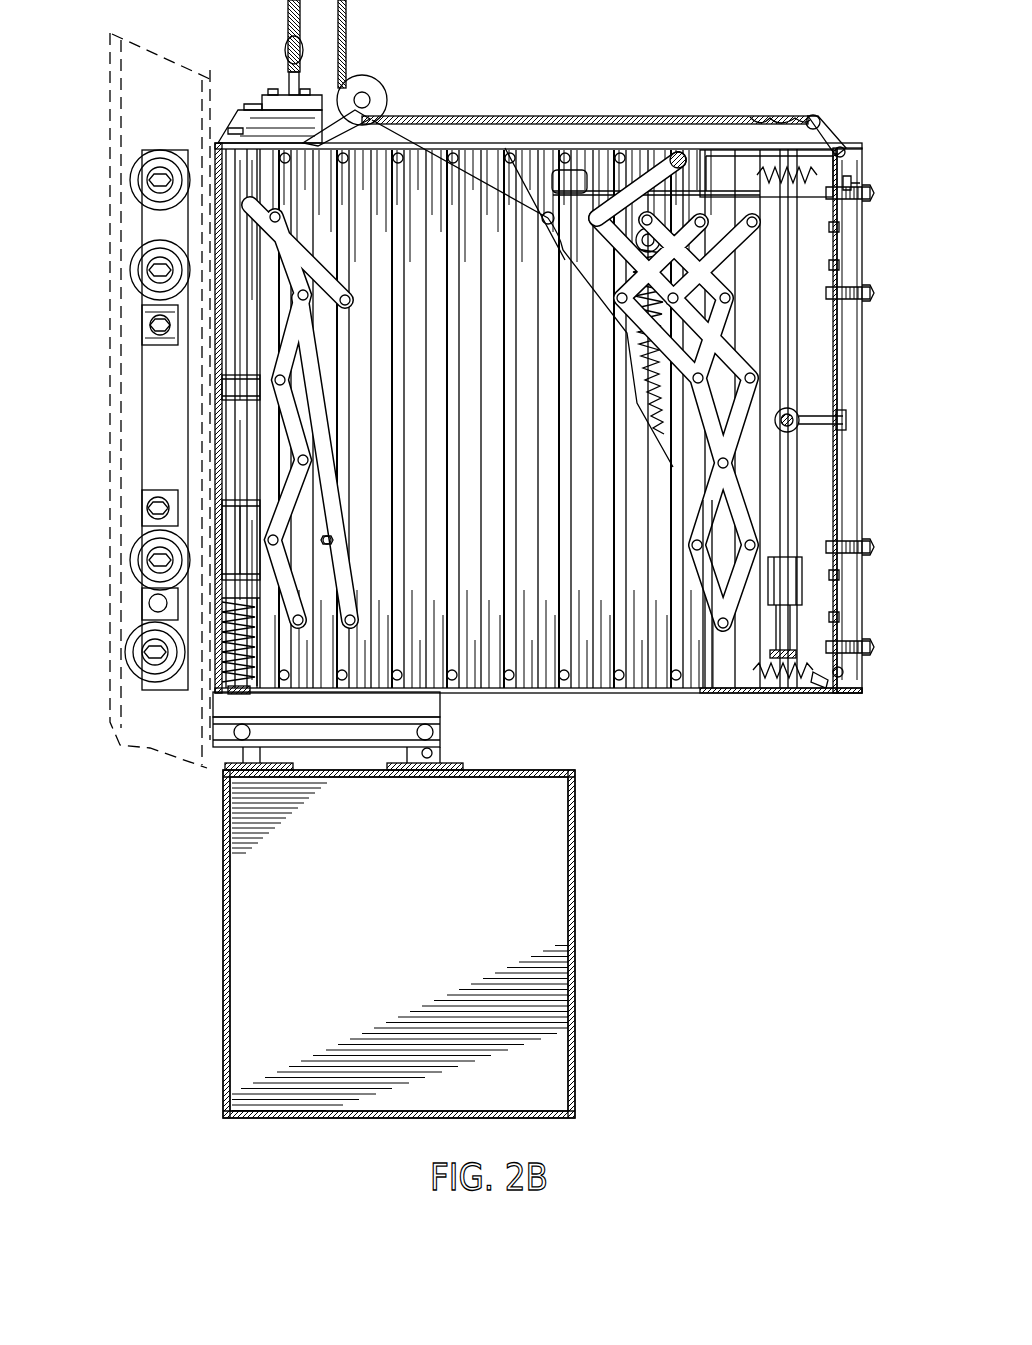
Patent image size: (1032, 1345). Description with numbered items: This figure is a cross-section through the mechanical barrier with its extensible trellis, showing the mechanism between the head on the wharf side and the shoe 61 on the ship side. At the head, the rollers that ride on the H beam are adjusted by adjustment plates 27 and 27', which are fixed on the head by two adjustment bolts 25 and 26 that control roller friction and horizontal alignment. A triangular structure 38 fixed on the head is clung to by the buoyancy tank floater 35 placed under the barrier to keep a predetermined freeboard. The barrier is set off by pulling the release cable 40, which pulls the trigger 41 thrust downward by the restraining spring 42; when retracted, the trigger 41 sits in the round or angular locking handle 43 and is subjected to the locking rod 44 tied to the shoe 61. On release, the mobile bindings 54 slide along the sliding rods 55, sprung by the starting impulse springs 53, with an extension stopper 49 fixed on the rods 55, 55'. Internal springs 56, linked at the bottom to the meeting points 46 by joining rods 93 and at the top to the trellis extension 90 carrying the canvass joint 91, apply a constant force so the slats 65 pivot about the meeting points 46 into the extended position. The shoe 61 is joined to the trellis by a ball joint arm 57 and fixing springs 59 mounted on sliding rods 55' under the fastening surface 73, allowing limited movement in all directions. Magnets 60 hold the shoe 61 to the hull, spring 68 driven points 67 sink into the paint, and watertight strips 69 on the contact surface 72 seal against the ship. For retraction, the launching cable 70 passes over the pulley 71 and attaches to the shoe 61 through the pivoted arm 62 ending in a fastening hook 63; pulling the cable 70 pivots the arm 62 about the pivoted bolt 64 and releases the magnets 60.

The adjustment bolt 25 is at (153, 507).
The adjustment bolt 26 is at (150, 604).
The adjustment plate 27 is at (121, 420).
The adjustment plate 27' is at (120, 548).
The buoyancy tank floater 35 is at (576, 893).
The triangular structure 38 is at (222, 730).
The release cable 40 is at (290, 42).
The trigger 41 is at (291, 86).
The restraining spring 42 is at (250, 123).
The locking handle 43 is at (555, 191).
The locking rod 44 is at (643, 232).
The meeting point 46 is at (420, 650).
The extension stopper 49 is at (213, 393).
The starting impulse spring 53 is at (212, 665).
The mobile binding 54 is at (228, 507).
The sliding rod 55 is at (201, 386).
The sliding rod 55' is at (746, 447).
The internal spring 56 is at (556, 172).
The ball joint arm 57 is at (815, 432).
The fixing spring 59 is at (782, 683).
The magnet 60 is at (850, 245).
The shoe 61 is at (844, 150).
The pivoted arm 62 is at (826, 130).
The fastening hook 63 is at (797, 117).
The pivoted bolt 64 is at (852, 185).
The slat 65 is at (680, 560).
The point 67 is at (864, 198).
The spring 68 is at (866, 192).
The watertight strip 69 is at (853, 393).
The launching cable 70 is at (678, 152).
The pulley 71 is at (362, 80).
The contact surface 72 is at (842, 676).
The fastening surface 73 is at (818, 688).
The trellis extension 90 is at (708, 158).
The canvass joint 91 is at (655, 232).
The joining rod 93 is at (495, 120).